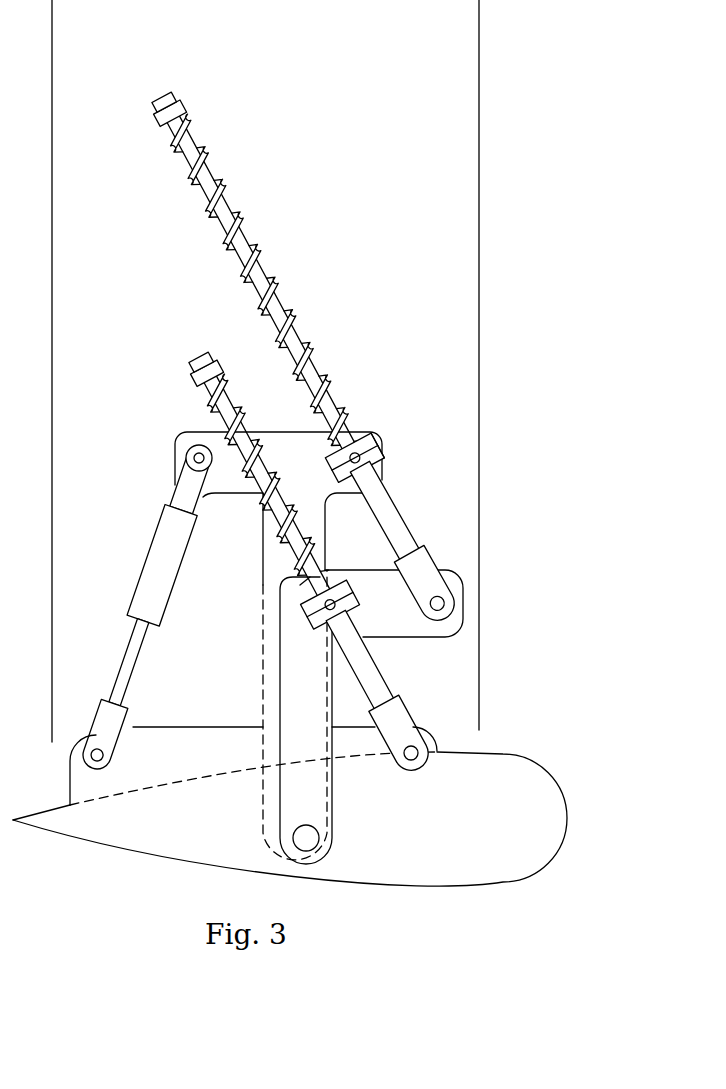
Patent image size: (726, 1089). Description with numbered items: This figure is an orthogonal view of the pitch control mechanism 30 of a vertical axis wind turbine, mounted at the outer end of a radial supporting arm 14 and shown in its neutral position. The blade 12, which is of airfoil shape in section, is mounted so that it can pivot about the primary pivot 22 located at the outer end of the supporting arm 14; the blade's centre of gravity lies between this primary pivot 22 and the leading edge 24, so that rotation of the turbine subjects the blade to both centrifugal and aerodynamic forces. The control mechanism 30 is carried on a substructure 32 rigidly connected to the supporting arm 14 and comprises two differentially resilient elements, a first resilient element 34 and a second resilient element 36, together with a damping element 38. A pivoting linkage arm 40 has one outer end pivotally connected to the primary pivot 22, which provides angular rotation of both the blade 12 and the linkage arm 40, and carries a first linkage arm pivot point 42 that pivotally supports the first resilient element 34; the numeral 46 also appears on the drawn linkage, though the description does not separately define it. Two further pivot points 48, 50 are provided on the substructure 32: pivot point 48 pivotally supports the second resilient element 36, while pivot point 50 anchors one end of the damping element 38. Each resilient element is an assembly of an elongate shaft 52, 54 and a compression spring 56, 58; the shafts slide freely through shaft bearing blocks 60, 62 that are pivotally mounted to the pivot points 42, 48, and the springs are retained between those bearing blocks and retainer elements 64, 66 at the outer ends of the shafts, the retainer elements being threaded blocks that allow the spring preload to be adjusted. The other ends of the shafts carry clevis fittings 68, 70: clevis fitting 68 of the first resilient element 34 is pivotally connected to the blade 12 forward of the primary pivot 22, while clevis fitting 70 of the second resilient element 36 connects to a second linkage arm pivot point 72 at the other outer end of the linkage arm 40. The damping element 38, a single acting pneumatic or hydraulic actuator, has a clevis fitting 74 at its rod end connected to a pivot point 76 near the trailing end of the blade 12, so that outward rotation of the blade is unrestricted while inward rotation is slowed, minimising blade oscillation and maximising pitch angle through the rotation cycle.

The blade 12 is at (473, 868).
The radial supporting arm 14 is at (480, 327).
The primary pivot 22 is at (333, 840).
The leading edge 24 is at (329, 829).
The control mechanism 30 is at (251, 454).
The substructure 32 is at (326, 622).
The first resilient element 34 is at (265, 676).
The second resilient element 36 is at (311, 347).
The damping element 38 is at (149, 580).
The pivoting linkage arm 40 is at (368, 567).
The first linkage arm pivot point 42 is at (272, 627).
The link arm 46 is at (319, 720).
The pivot point 48 is at (384, 457).
The pivot point 50 is at (175, 459).
The elongate shaft 52 is at (375, 683).
The elongate shaft 54 is at (395, 519).
The compression spring 56 is at (210, 412).
The compression spring 58 is at (254, 245).
The shaft bearing block 60 is at (312, 616).
The shaft bearing block 62 is at (381, 450).
The retainer element 64 is at (192, 372).
The retainer element 66 is at (174, 97).
The clevis fitting 68 is at (400, 722).
The clevis fitting 70 is at (420, 573).
The second linkage arm pivot point 72 is at (444, 616).
The clevis fitting 74 is at (113, 735).
The pivot point 76 is at (89, 767).